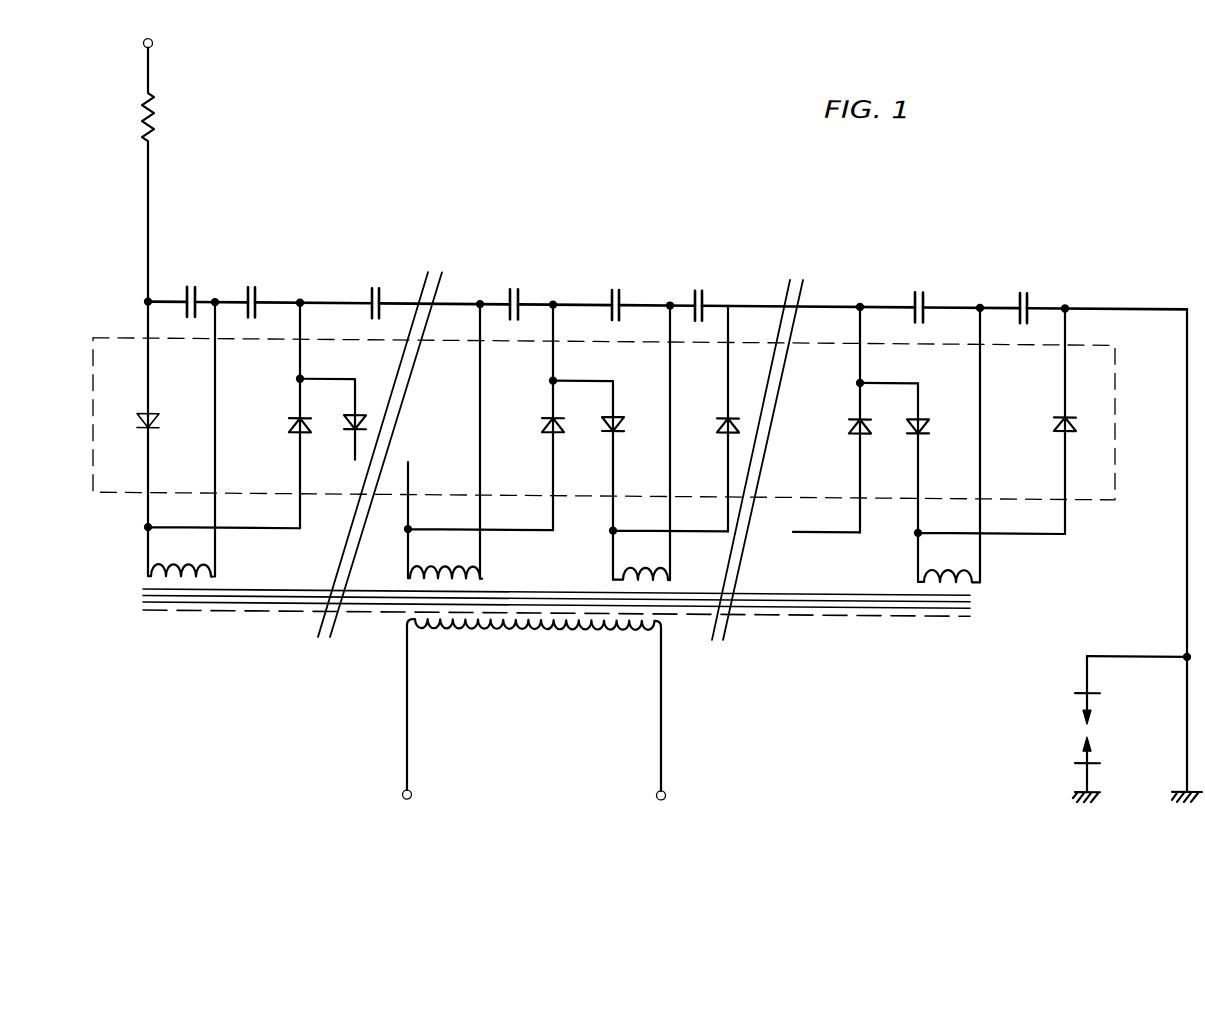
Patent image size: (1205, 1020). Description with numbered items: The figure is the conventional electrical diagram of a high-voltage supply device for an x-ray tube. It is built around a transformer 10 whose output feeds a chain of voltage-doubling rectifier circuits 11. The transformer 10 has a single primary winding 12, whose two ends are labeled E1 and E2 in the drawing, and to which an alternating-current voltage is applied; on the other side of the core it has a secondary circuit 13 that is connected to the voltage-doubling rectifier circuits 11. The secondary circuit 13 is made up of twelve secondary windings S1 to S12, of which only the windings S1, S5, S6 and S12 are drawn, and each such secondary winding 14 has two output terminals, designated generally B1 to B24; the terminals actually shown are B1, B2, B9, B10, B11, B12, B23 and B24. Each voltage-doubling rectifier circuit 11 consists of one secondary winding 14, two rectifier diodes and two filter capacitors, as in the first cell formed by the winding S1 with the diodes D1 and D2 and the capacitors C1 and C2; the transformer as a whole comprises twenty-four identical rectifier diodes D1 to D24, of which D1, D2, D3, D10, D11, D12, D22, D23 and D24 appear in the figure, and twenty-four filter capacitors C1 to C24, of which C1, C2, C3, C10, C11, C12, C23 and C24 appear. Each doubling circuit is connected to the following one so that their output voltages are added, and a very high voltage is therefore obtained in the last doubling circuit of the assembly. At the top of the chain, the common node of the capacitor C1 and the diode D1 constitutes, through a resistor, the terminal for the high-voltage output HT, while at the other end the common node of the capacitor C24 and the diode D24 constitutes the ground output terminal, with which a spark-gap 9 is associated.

The high-voltage output HT is at (176, 168).
The filter capacitor C1 is at (179, 296).
The filter capacitor C2 is at (257, 288).
The filter capacitor C3 is at (381, 289).
The filter capacitor C10 is at (521, 288).
The filter capacitor C11 is at (621, 287).
The filter capacitor C12 is at (705, 286).
The filter capacitor C23 is at (936, 276).
The filter capacitor C24 is at (1030, 289).
The output terminal B1 is at (146, 528).
The output terminal B2 is at (217, 296).
The output terminal B9 is at (406, 526).
The output terminal B10 is at (481, 294).
The output terminal B11 is at (613, 525).
The output terminal B12 is at (672, 292).
The output terminal B23 is at (916, 524).
The output terminal B24 is at (981, 290).
The rectifier diode D1 is at (160, 412).
The rectifier diode D2 is at (290, 416).
The rectifier diode D3 is at (366, 416).
The rectifier diode D10 is at (542, 414).
The rectifier diode D11 is at (620, 408).
The rectifier diode D12 is at (718, 413).
The rectifier diode D22 is at (849, 416).
The rectifier diode D23 is at (926, 411).
The rectifier diode D24 is at (1052, 420).
The secondary winding S1 is at (215, 576).
The secondary winding S5 is at (480, 574).
The secondary winding S6 is at (670, 575).
The secondary winding S12 is at (982, 571).
The spark-gap 9 is at (1058, 710).
The transformer 10 is at (394, 614).
The voltage-doubling rectifier circuits 11 is at (596, 206).
The primary winding 12 is at (592, 633).
The secondary circuit 13 is at (138, 576).
The secondary winding 14 is at (175, 582).
The primary terminal E1 is at (408, 817).
The primary terminal E2 is at (662, 817).